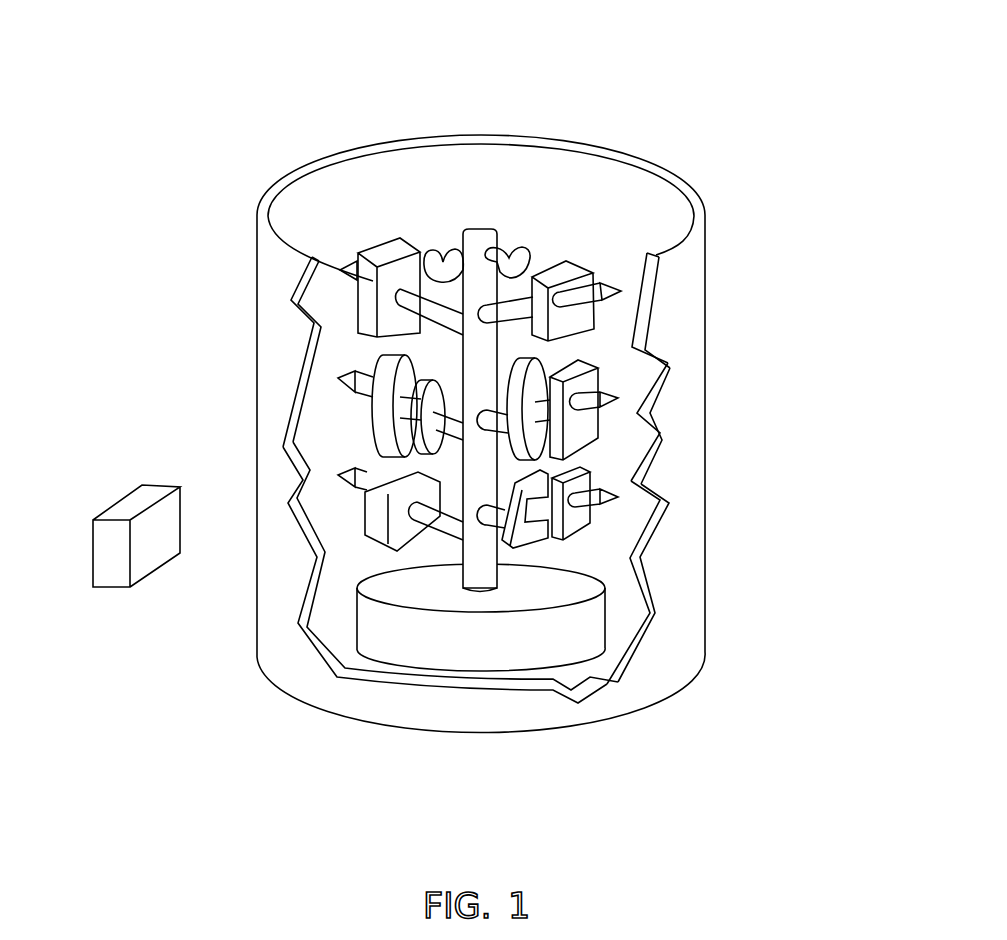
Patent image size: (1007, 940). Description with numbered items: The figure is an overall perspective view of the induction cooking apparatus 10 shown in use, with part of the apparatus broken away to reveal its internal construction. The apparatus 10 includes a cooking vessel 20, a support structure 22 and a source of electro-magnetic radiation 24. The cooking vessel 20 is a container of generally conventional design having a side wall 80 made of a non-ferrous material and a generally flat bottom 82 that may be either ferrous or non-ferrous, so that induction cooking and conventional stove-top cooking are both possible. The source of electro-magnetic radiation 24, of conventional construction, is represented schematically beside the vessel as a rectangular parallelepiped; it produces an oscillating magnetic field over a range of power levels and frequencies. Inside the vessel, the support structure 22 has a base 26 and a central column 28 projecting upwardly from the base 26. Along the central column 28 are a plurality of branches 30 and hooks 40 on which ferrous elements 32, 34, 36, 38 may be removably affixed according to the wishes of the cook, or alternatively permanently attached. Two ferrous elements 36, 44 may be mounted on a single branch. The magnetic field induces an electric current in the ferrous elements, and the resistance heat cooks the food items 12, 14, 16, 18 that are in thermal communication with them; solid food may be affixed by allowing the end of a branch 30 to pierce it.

The induction cooking apparatus 10 is at (703, 92).
The food item 12 is at (262, 227).
The food item 14 is at (575, 267).
The food item 16 is at (620, 432).
The food item 18 is at (600, 528).
The cooking vessel 20 is at (257, 659).
The support structure 22 is at (482, 218).
The source of electro-magnetic radiation 24 is at (147, 566).
The base 26 is at (588, 612).
The central column 28 is at (475, 574).
The branches 30 is at (338, 270).
The ferrous element 32 is at (552, 348).
The ferrous element 34 is at (505, 556).
The ferrous element 36 is at (375, 418).
The ferrous element 38 is at (385, 535).
The hooks 40 is at (444, 257).
The ferrous element 44 is at (373, 428).
The side wall 80 is at (706, 560).
The flat bottom 82 is at (588, 672).